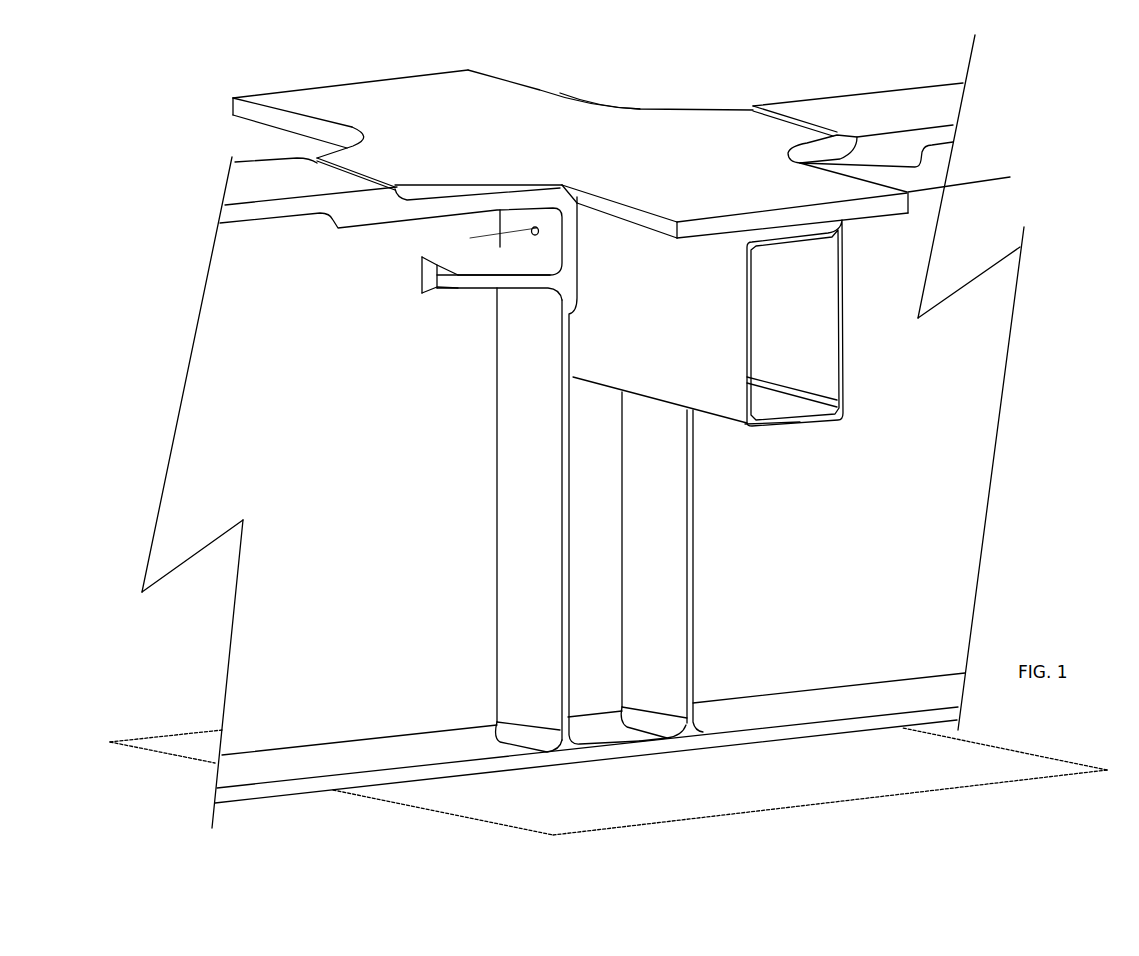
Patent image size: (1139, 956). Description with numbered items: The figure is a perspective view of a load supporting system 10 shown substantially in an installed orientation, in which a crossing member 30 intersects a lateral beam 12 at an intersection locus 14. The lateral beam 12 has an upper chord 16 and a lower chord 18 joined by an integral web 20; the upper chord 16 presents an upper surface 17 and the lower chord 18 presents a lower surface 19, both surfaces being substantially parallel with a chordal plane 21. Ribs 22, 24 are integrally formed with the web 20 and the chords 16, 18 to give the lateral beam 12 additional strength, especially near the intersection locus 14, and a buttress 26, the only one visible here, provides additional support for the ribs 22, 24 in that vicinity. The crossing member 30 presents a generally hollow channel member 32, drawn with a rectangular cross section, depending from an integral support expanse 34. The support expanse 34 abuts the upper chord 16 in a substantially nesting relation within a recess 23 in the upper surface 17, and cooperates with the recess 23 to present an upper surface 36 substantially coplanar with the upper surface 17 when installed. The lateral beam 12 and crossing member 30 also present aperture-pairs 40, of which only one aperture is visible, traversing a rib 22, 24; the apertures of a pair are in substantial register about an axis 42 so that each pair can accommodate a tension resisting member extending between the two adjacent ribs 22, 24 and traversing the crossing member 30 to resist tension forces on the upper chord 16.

The load supporting system 10 is at (1084, 424).
The lateral beam 12 is at (695, 758).
The intersection locus 14 is at (861, 313).
The upper chord 16 is at (280, 217).
The upper surface 17 is at (272, 180).
The lower chord 18 is at (273, 752).
The lower surface 19 is at (318, 792).
The web 20 is at (253, 650).
The chordal plane 21 is at (155, 735).
The rib 22 is at (512, 590).
The recess 23 is at (836, 147).
The rib 24 is at (695, 588).
The buttress 26 is at (420, 275).
The crossing member 30 is at (597, 90).
The channel member 32 is at (800, 424).
The support expanse 34 is at (530, 88).
The upper surface 36 is at (620, 118).
The aperture-pair 40 is at (531, 237).
The axis 42 is at (987, 182).